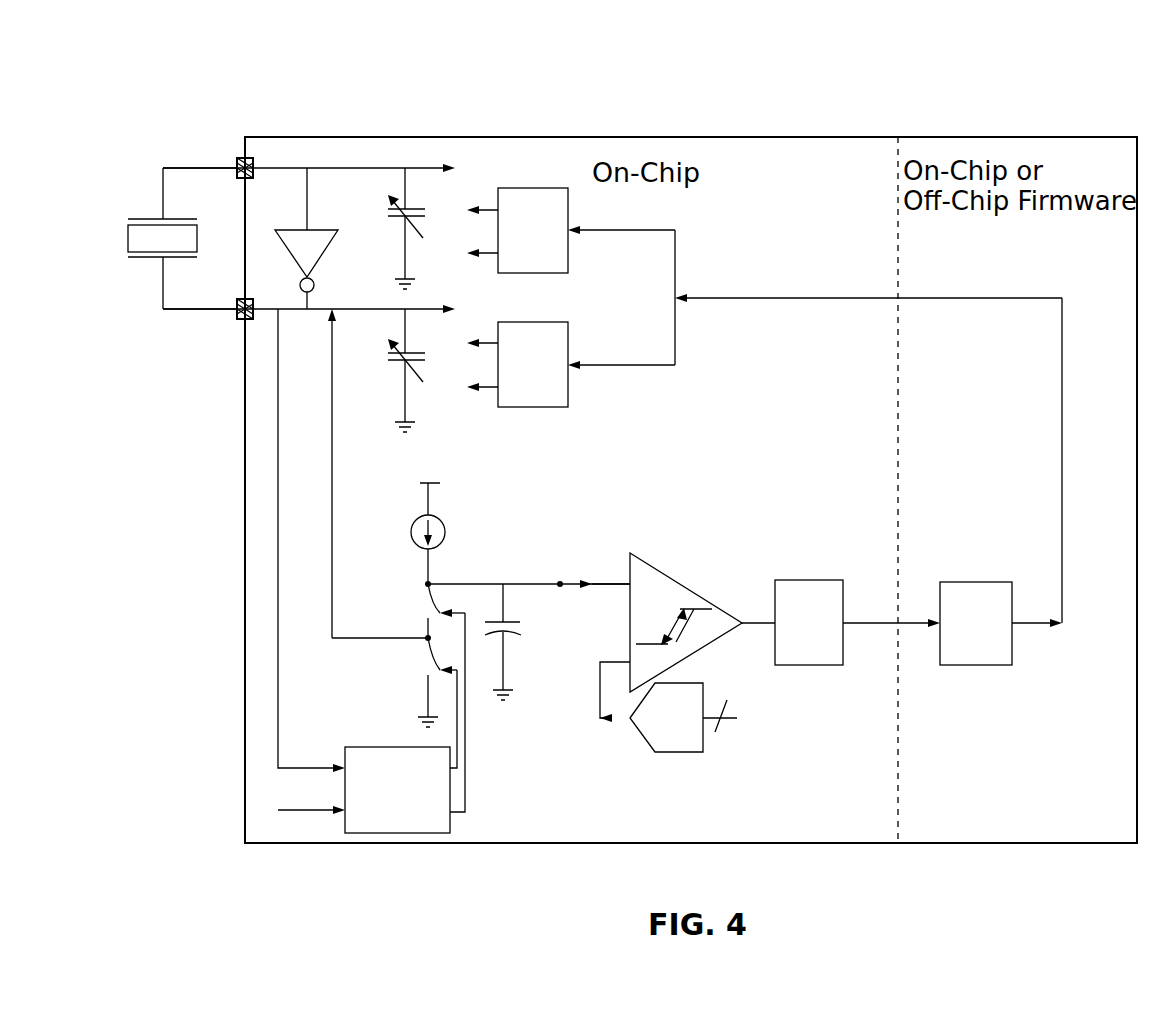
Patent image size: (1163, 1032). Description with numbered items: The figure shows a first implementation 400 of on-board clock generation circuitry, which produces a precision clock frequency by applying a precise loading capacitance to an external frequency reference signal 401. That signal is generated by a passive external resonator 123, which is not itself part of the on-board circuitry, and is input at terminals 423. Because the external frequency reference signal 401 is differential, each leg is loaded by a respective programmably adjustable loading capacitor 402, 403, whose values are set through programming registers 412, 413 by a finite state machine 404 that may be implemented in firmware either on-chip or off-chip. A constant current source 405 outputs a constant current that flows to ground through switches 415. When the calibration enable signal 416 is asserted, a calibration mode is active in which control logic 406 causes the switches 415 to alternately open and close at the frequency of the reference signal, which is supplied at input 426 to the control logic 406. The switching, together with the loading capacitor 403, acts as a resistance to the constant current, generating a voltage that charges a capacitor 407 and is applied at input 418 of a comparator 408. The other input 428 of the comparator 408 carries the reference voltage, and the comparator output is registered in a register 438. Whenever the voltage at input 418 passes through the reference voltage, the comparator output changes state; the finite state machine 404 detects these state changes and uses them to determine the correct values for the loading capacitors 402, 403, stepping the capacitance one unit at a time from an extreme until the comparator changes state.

The first implementation of on-board clock generation circuitry 400 is at (158, 48).
The passive external resonator 123 is at (133, 258).
The external frequency reference signal 401 is at (197, 173).
The terminals 423 is at (238, 158).
The programmably adjustable loading capacitor 402 is at (415, 203).
The programmably adjustable loading capacitor 403 is at (415, 344).
The programming register 412 is at (545, 273).
The programming register 413 is at (533, 322).
The constant current source 405 is at (441, 518).
The switches 415 is at (430, 606).
The control logic input 426 is at (292, 765).
The capacitor 407 is at (517, 617).
The comparator input 418 is at (625, 584).
The comparator 408 is at (658, 568).
The comparator reference input 428 is at (622, 660).
The output register 438 is at (800, 580).
The finite state machine 404 is at (975, 582).
The control logic 406 is at (415, 747).
The Cal_EN signal 416 is at (295, 813).